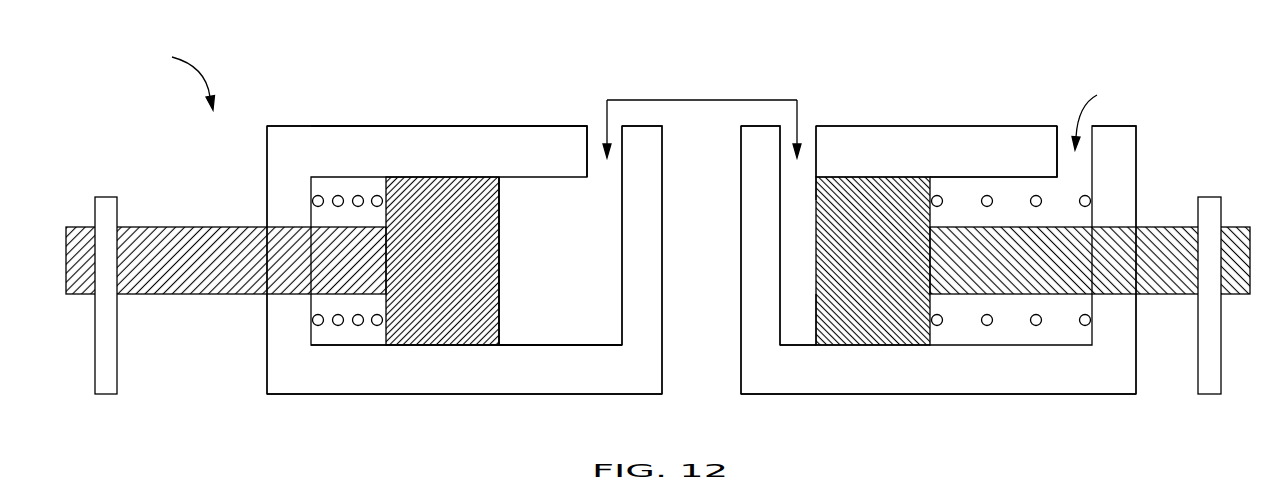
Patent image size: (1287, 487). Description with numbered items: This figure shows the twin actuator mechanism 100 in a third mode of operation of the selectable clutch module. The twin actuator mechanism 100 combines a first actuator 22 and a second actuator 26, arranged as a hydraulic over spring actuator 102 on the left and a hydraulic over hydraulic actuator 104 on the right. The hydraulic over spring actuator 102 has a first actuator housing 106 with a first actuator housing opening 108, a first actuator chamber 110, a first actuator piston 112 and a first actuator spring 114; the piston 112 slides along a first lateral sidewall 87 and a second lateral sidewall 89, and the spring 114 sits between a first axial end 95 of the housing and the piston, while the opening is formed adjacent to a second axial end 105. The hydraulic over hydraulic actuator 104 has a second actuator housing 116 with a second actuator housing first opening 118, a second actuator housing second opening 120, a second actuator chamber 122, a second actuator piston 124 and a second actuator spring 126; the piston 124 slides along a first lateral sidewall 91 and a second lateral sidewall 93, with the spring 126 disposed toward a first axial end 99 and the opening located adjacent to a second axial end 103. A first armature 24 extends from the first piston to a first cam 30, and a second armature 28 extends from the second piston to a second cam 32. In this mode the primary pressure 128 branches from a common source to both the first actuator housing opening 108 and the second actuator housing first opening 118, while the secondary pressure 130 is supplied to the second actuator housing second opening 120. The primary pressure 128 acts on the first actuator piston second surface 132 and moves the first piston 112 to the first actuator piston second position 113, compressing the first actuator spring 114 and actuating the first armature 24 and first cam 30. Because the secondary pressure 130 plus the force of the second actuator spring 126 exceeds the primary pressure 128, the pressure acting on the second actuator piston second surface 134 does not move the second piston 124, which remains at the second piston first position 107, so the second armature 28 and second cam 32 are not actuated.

The twin actuator mechanism 100 is at (175, 79).
The hydraulic over spring actuator 102 is at (295, 156).
The first actuator spring 114 is at (359, 195).
The first lateral sidewall 87 is at (400, 143).
The first actuator piston 112 is at (438, 176).
The first actuator piston second surface 132 is at (502, 243).
The first actuator housing opening 108 is at (586, 136).
The primary pressure 128 is at (703, 100).
The hydraulic over hydraulic actuator 104 is at (763, 135).
The second actuator housing first opening 118 is at (816, 138).
The second actuator piston second surface 134 is at (815, 205).
The second actuator housing 116 is at (920, 143).
The first lateral sidewall 91 is at (986, 140).
The second actuator housing second opening 120 is at (1057, 140).
The secondary pressure 130 is at (1101, 115).
The first axial end 99 is at (1125, 160).
The first axial end 95 is at (280, 193).
The second axial end 103 is at (757, 216).
The second axial end 105 is at (648, 286).
The first armature 24 is at (192, 296).
The first cam 30 is at (105, 385).
The first actuator 22 is at (285, 383).
The second lateral sidewall 89 is at (345, 383).
The first actuator housing 106 is at (405, 373).
The first actuator piston second position 113 is at (498, 346).
The first actuator chamber 110 is at (543, 325).
The second actuator 26 is at (758, 360).
The second actuator chamber 122 is at (797, 325).
The second piston first position 107 is at (816, 345).
The second actuator piston 124 is at (895, 333).
The second lateral sidewall 93 is at (947, 385).
The second actuator spring 126 is at (987, 326).
The second armature 28 is at (1166, 296).
The second cam 32 is at (1210, 385).